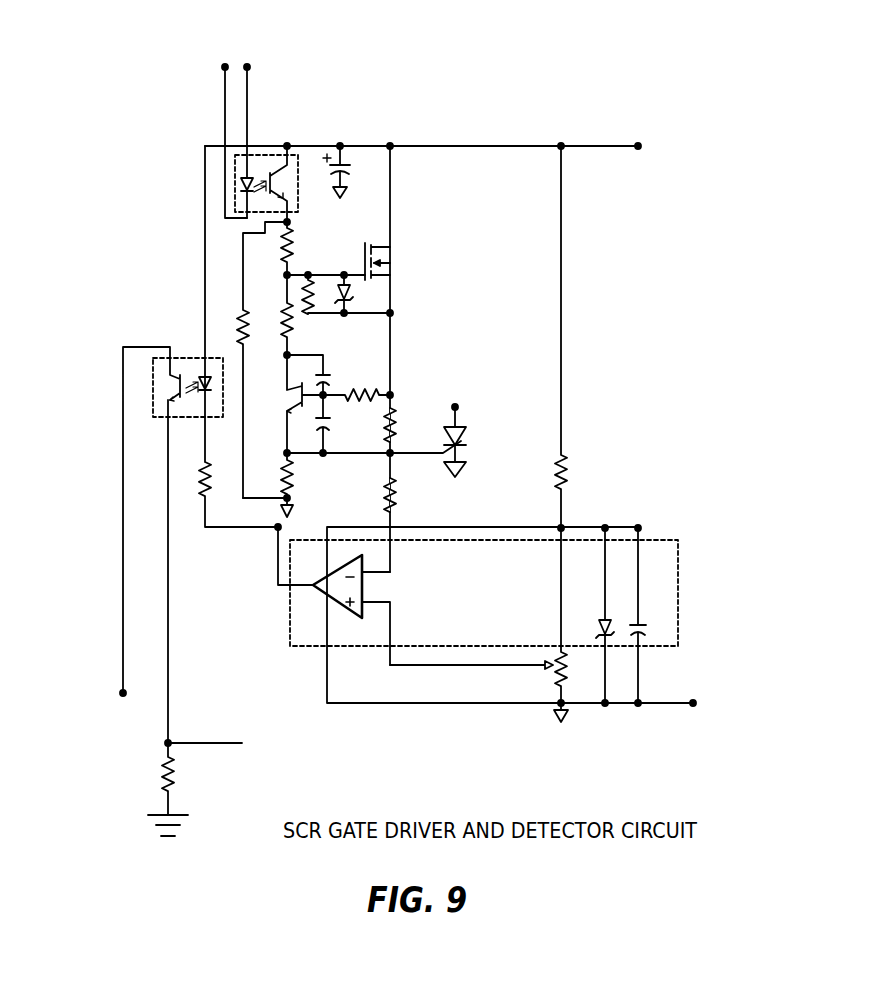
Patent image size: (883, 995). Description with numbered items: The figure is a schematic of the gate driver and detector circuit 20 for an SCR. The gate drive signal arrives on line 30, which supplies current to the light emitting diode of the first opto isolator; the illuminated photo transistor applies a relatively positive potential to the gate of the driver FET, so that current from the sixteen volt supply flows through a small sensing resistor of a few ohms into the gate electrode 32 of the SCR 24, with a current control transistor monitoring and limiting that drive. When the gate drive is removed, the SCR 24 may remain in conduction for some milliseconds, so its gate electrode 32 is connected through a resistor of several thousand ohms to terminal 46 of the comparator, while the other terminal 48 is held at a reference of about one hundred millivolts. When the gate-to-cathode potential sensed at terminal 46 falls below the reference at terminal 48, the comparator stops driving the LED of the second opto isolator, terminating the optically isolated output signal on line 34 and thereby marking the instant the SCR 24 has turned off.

The gate driver and detector circuit 20 is at (763, 121).
The SCR 24 is at (467, 427).
The line 30 is at (249, 108).
The gate electrode 32 is at (407, 453).
The line 34 is at (168, 610).
The terminal 46 is at (382, 572).
The terminal 48 is at (377, 602).